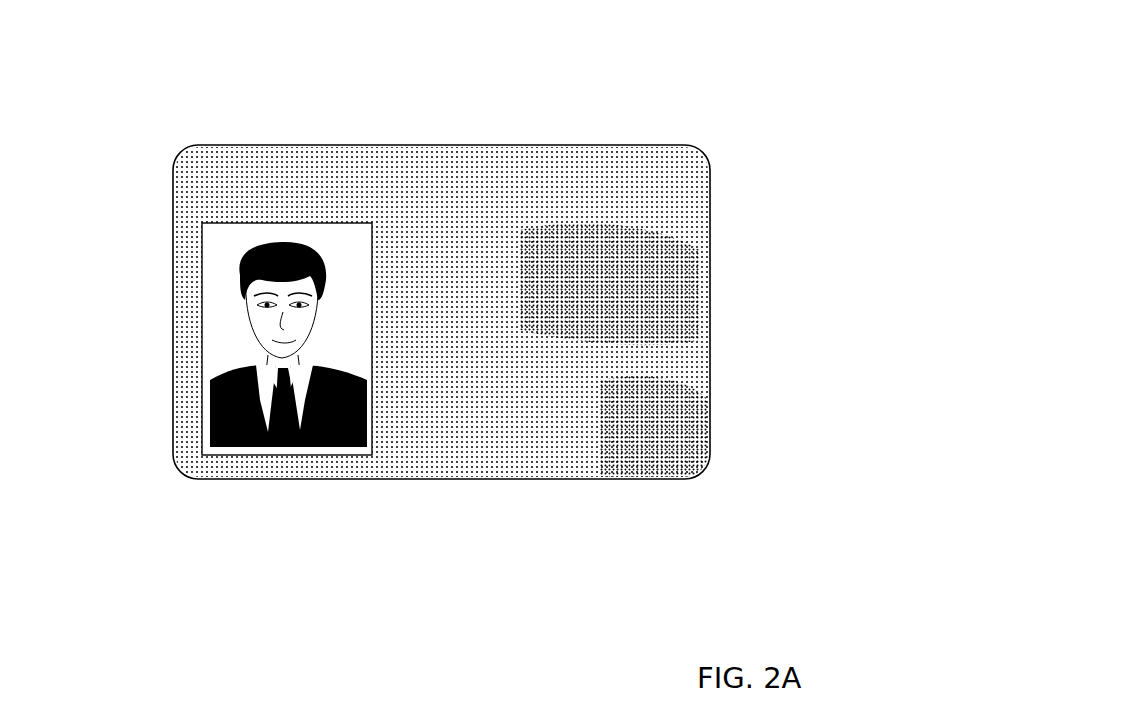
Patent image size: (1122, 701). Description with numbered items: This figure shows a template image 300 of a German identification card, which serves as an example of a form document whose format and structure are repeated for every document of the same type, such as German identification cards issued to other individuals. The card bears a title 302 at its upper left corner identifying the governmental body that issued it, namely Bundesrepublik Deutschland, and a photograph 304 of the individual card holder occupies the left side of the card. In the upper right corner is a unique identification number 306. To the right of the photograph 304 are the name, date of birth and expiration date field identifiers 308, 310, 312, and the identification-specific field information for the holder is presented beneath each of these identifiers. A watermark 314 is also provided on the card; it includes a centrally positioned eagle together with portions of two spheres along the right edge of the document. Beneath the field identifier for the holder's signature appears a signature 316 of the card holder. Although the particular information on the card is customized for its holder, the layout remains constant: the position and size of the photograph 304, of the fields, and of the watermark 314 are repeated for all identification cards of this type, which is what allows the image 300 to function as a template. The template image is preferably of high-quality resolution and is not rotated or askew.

The image of a German identification card 300 is at (750, 533).
The title 302 is at (352, 160).
The photograph 304 is at (222, 278).
The unique identification number 306 is at (650, 160).
The name field identifier 308 is at (394, 244).
The date of birth field identifier 310 is at (395, 299).
The expiration date field identifier 312 is at (396, 355).
The watermark 314 is at (693, 224).
The signature 316 is at (550, 452).